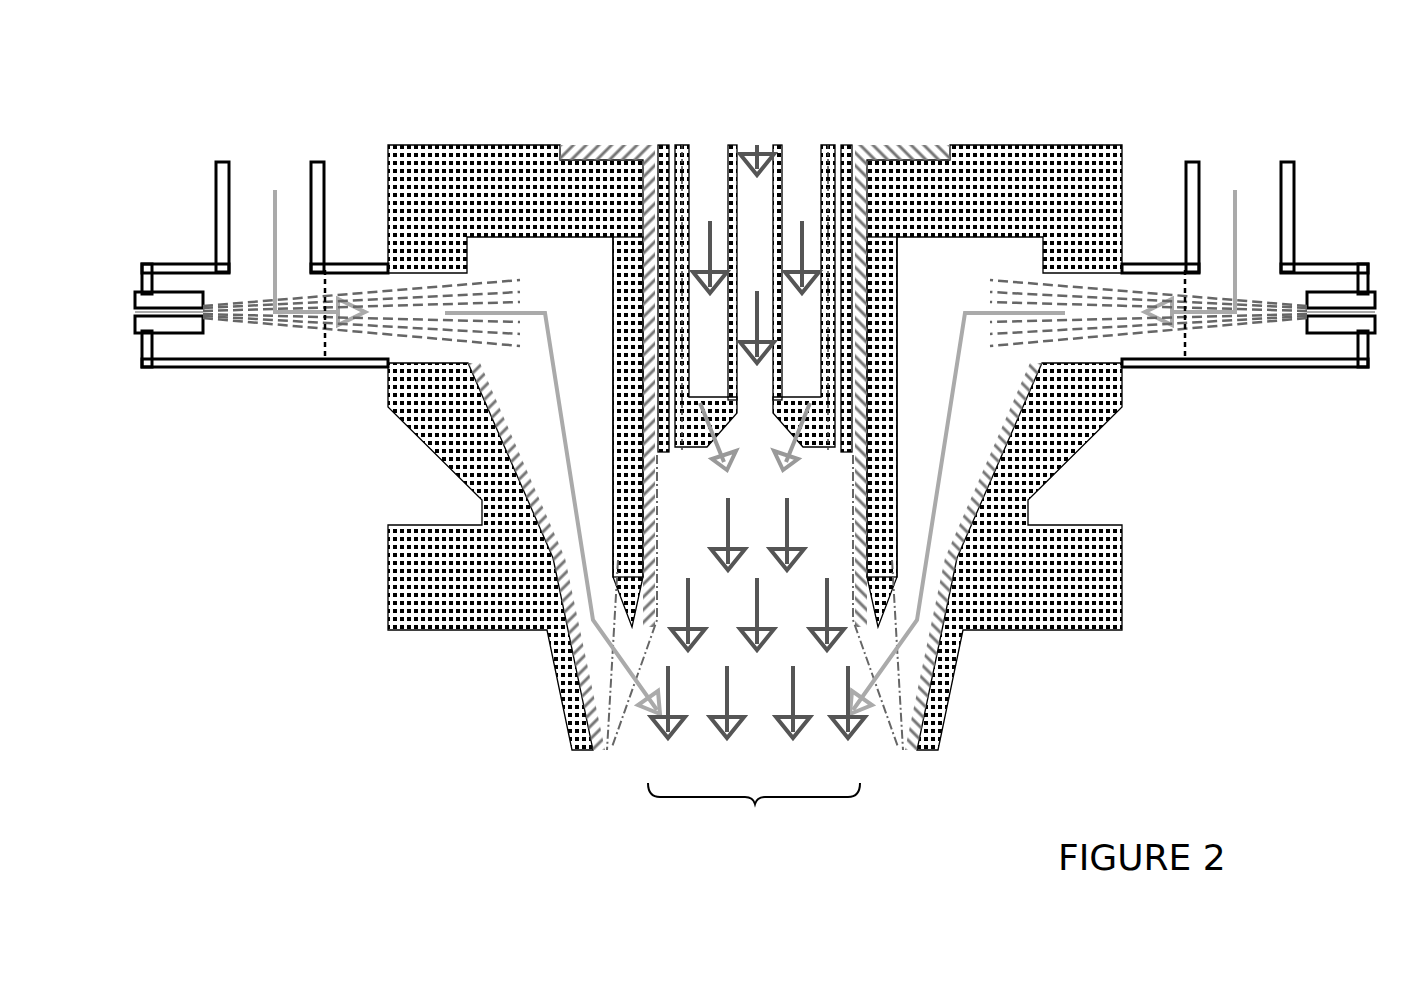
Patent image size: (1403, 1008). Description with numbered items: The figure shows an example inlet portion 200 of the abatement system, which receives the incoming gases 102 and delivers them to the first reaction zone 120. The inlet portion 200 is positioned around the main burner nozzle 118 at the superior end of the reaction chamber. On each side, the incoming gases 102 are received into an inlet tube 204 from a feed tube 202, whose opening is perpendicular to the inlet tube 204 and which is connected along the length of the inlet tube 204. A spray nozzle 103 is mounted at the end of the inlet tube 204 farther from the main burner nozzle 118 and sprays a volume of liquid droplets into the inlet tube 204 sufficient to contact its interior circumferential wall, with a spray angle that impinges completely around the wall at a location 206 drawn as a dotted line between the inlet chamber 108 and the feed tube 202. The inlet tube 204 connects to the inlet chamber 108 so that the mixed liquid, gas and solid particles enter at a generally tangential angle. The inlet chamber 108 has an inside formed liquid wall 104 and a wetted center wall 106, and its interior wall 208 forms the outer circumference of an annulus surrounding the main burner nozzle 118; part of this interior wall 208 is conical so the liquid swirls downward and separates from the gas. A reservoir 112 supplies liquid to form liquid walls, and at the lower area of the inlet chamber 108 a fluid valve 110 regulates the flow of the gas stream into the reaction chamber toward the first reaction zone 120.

The inlet portion 200 is at (320, 77).
The incoming gases 102 is at (759, 233).
The spray nozzle 103 is at (165, 334).
The liquid wall 104 is at (480, 397).
The center wall 106 is at (613, 257).
The inlet chamber 108 is at (755, 513).
The fluid valve 110 is at (618, 697).
The reservoir 112 is at (620, 147).
The main burner nozzle 118 is at (758, 441).
The first reaction zone 120 is at (754, 812).
The feed tube 202 is at (216, 188).
The inlet tube 204 is at (755, 318).
The location 206 is at (325, 333).
The interior wall 208 is at (483, 423).